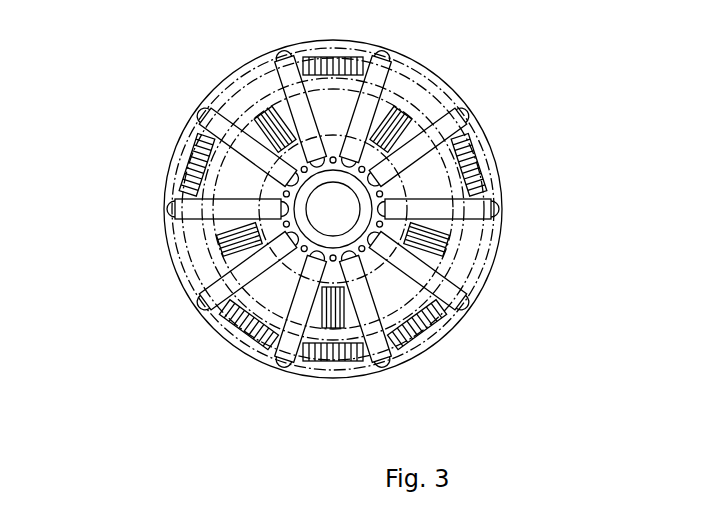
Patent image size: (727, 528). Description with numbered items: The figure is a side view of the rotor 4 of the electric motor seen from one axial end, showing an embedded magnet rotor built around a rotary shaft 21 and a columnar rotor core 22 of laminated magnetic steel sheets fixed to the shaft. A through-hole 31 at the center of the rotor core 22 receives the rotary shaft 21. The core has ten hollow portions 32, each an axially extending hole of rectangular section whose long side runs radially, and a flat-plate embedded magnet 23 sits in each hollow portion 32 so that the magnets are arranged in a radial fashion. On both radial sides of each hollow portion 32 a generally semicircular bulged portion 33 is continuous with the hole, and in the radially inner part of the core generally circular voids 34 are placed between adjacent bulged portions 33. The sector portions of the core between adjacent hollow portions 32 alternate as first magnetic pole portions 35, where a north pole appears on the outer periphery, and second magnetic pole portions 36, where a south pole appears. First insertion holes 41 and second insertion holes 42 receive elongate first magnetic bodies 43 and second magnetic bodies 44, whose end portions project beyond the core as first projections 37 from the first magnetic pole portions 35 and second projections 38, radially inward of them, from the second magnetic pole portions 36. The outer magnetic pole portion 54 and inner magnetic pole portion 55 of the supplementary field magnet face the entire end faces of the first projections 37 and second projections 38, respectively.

The rotor 4 is at (62, 63).
The rotary shaft 21 is at (333, 156).
The rotor core 22 is at (360, 42).
The embedded magnets 23 is at (467, 304).
The through-hole 31 is at (283, 193).
The hollow portions 32 is at (382, 358).
The bulged portion 33 is at (493, 107).
The voids 34 is at (303, 252).
The first magnetic pole portions 35 is at (308, 47).
The second magnetic pole portions 36 is at (240, 98).
The first projections 37 is at (482, 172).
The second projections 38 is at (446, 246).
The first insertion holes 41 is at (187, 187).
The second insertion holes 42 is at (221, 253).
The first magnetic bodies 43 is at (230, 325).
The second magnetic bodies 44 is at (350, 347).
The outer magnetic pole portion 54 is at (455, 90).
The inner magnetic pole portion 55 is at (410, 72).